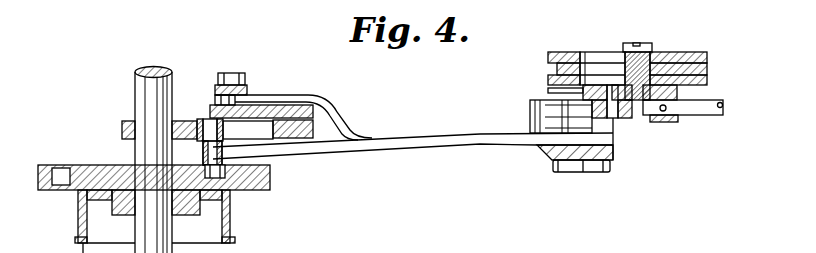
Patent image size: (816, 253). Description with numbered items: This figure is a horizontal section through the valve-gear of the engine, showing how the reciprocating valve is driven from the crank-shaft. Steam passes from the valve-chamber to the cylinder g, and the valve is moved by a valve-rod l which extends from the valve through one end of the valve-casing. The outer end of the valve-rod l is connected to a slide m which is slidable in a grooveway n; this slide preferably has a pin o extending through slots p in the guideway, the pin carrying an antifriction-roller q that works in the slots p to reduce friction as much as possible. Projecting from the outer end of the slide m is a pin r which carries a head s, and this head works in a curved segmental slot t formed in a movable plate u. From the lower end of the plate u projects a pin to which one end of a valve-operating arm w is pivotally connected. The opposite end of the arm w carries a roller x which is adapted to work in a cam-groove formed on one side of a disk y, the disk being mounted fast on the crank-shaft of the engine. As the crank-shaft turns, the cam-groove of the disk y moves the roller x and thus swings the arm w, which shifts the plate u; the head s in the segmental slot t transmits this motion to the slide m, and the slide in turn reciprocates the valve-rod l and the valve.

The cylinder g is at (449, 136).
The valve-operating arm w is at (410, 154).
The disk y is at (270, 188).
The roller x is at (206, 170).
The slots p is at (598, 58).
The antifriction-roller q is at (618, 60).
The pin o is at (638, 42).
The grooveway n is at (560, 90).
The slide m is at (680, 93).
The valve-rod l is at (709, 116).
The curved segmental slot t is at (560, 108).
The pin r is at (612, 120).
The head s is at (620, 120).
The movable plate u is at (630, 118).